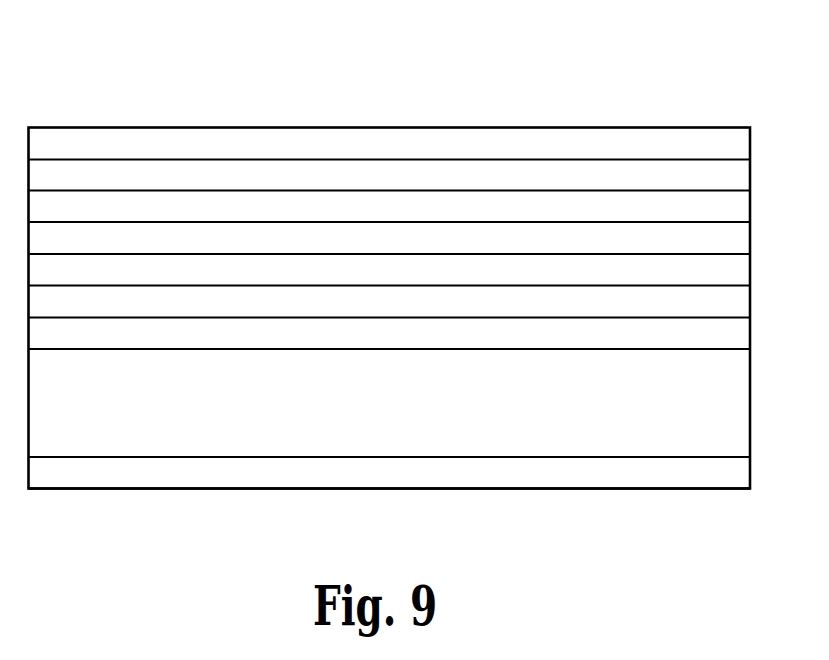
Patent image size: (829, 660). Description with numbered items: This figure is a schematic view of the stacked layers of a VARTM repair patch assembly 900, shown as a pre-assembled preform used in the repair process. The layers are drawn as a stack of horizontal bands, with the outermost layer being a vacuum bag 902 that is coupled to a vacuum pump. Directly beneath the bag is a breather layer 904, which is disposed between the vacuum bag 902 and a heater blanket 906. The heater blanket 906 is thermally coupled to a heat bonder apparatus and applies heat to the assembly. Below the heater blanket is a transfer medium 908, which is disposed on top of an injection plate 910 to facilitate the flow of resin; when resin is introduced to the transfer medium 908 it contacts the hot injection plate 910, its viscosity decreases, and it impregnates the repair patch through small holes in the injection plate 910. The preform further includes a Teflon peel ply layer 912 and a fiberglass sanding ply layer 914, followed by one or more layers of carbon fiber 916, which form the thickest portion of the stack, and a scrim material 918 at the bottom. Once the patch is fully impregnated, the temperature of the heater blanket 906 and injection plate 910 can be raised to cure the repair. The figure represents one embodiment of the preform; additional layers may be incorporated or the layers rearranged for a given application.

The layered structure 900 is at (117, 85).
The vacuum bag 902 is at (404, 152).
The breather layer 904 is at (404, 183).
The heater blanket 906 is at (404, 214).
The transfer medium 908 is at (404, 246).
The injection plate 910 is at (404, 278).
The Teflon peel ply layer 912 is at (404, 310).
The fiberglass sanding ply layer 914 is at (404, 341).
The carbon fiber layers 916 is at (405, 412).
The scrim material 918 is at (405, 484).